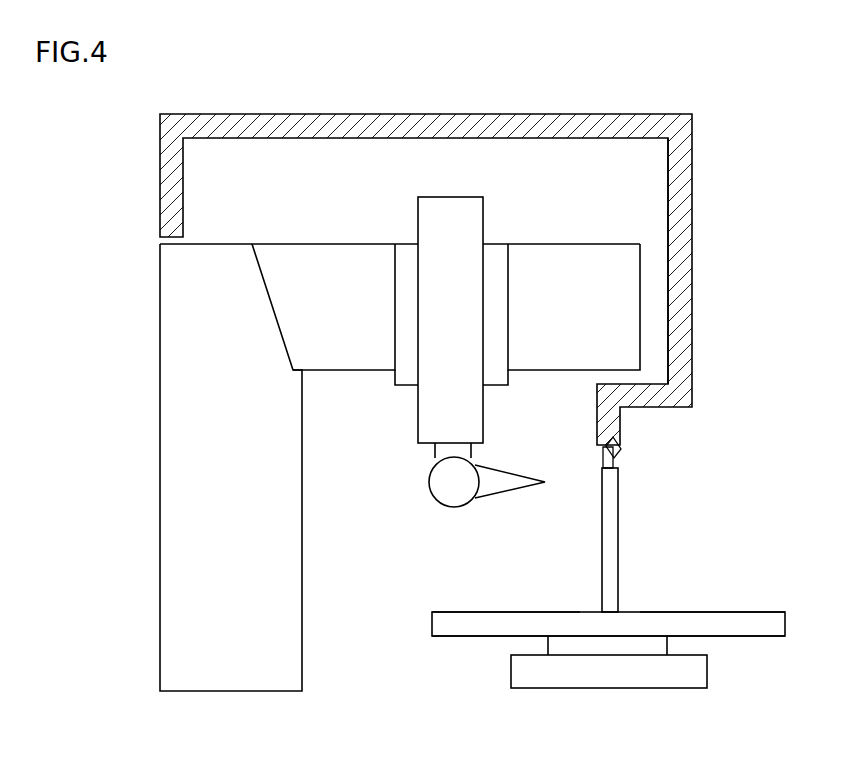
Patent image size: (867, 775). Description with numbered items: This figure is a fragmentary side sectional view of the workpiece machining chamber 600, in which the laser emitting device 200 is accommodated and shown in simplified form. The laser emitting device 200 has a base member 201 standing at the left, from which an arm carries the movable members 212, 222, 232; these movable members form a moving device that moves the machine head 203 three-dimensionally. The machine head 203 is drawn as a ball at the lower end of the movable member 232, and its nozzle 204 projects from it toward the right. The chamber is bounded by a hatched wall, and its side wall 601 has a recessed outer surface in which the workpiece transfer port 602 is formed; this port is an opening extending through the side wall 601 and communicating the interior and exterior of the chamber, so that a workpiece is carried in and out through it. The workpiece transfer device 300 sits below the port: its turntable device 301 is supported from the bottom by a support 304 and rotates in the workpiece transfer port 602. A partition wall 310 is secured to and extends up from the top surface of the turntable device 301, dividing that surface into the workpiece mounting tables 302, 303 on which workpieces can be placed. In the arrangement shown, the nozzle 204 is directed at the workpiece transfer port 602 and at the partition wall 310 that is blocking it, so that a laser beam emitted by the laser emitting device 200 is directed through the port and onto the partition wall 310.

The laser emitting device 200 is at (266, 244).
The base member 201 is at (178, 506).
The movable member 212 is at (337, 262).
The movable member 222 is at (497, 273).
The movable member 232 is at (450, 215).
The machine head 203 is at (445, 483).
The nozzle 204 is at (510, 482).
The workpiece machining chamber 600 is at (572, 128).
The side wall 601 is at (683, 224).
The workpiece transfer port 602 is at (598, 453).
The partition wall 310 is at (608, 528).
The turntable device 301 is at (758, 612).
The workpiece mounting table 302 is at (700, 612).
The workpiece mounting table 303 is at (517, 612).
The support 304 is at (585, 677).
The workpiece transfer device 300 is at (700, 688).